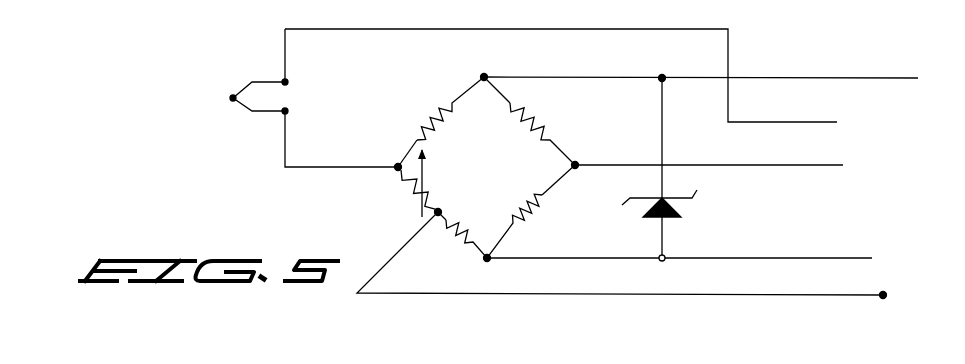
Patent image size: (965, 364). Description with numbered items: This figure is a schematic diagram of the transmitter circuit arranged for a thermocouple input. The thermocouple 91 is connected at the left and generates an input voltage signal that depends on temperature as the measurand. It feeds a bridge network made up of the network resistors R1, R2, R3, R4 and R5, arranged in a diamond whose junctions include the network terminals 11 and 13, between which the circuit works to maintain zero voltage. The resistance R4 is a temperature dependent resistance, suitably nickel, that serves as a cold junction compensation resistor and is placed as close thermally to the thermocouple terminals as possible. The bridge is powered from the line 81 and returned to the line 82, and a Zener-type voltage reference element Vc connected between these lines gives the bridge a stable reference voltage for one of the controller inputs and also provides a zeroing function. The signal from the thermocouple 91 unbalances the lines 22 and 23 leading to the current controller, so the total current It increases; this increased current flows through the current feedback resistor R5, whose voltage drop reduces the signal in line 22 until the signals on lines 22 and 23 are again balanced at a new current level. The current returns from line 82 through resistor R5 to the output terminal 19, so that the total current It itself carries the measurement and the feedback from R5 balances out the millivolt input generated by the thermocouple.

The thermocouple 91 is at (252, 82).
The network terminal 11 is at (398, 167).
The network resistor R1 is at (432, 132).
The network resistor R2 is at (528, 120).
The network resistor R3 is at (527, 203).
The cold junction compensation resistor R4 is at (421, 193).
The current feedback resistor R5 is at (467, 238).
The network terminal 13 is at (575, 167).
The line 81 is at (820, 78).
The line 22 is at (835, 122).
The line 23 is at (827, 165).
The line 82 is at (718, 258).
The reference voltage element Vc is at (678, 209).
The output terminal 19 is at (883, 296).
The total current It is at (707, 284).